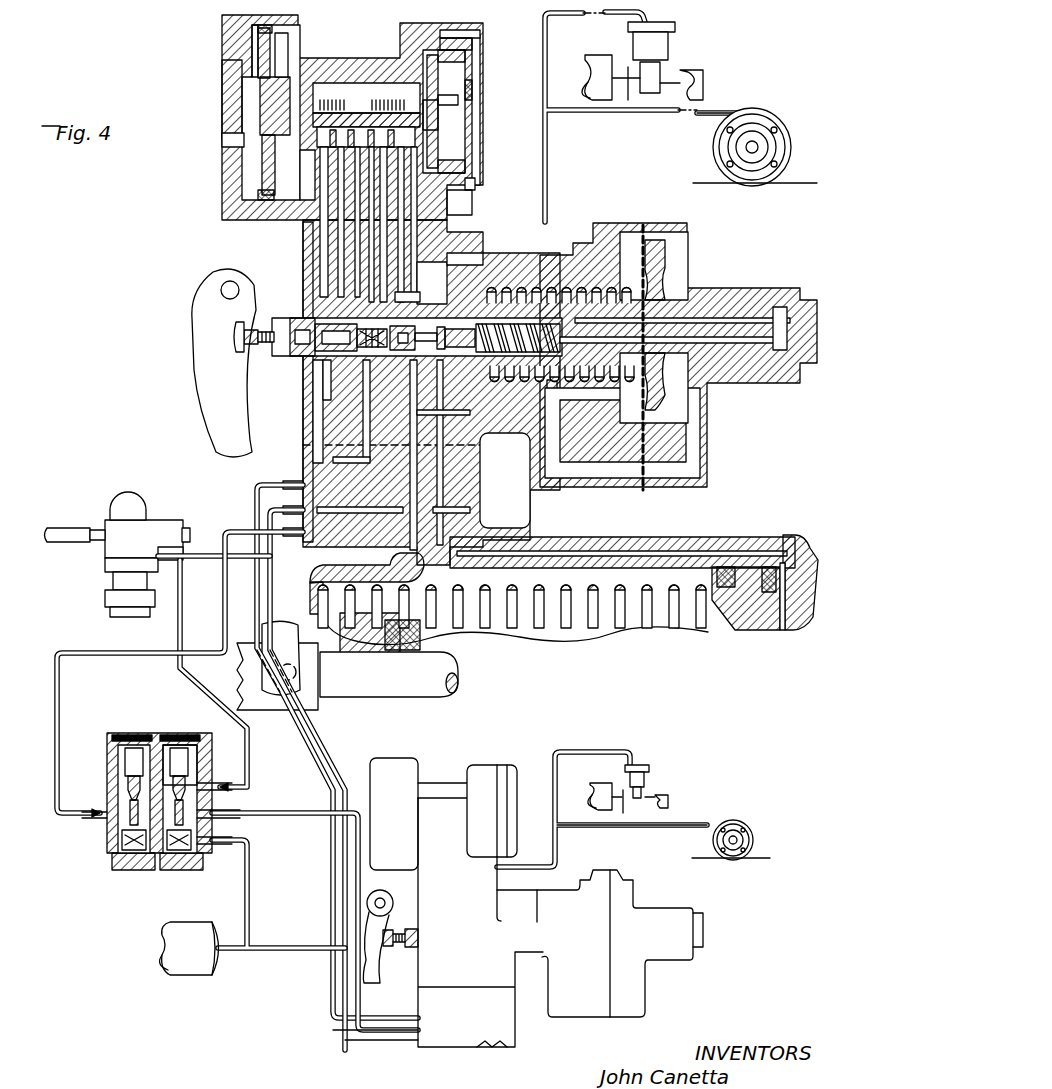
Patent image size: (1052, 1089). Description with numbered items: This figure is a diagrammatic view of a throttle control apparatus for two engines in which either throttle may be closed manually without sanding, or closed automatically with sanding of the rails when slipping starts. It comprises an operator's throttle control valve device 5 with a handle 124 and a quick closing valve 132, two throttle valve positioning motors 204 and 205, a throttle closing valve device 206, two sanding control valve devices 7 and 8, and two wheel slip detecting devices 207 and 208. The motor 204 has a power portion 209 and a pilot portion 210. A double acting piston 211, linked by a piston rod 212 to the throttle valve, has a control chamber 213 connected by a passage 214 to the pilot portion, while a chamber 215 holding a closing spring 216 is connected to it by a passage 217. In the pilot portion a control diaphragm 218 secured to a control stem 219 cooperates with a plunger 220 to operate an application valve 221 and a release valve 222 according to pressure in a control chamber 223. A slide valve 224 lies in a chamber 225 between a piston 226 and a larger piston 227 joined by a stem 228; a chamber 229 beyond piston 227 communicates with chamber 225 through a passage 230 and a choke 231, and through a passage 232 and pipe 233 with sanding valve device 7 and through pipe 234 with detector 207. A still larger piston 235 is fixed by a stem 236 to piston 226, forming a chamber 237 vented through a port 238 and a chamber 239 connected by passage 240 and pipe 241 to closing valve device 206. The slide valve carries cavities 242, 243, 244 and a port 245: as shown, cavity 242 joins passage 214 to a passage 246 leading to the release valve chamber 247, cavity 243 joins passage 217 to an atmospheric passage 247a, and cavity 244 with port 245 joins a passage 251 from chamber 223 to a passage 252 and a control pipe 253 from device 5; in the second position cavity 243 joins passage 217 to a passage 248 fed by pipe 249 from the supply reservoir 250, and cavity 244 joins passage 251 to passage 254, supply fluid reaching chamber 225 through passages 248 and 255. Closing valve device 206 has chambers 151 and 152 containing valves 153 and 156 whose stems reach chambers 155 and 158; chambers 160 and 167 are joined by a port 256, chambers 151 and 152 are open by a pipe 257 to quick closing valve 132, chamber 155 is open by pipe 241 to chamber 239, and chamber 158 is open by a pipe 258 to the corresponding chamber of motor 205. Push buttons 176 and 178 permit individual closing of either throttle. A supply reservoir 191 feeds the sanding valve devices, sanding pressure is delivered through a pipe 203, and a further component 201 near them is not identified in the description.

The operator's throttle control valve device 5 is at (123, 492).
The sanding control valve device 7 is at (680, 27).
The sanding control valve device 8 is at (648, 765).
The handle 124 is at (70, 530).
The quick closing valve 132 is at (167, 524).
The chamber 151 is at (120, 766).
The chamber 152 is at (200, 780).
The valve 153 is at (122, 788).
The chamber 155 is at (124, 812).
The valve 156 is at (210, 808).
The chamber 158 is at (210, 826).
The chamber 160 is at (118, 838).
The chamber 167 is at (190, 860).
The push button 176 is at (124, 734).
The push button 178 is at (176, 734).
The supply reservoir 191 is at (598, 62).
The connector 201 is at (694, 75).
The pipe 203 is at (628, 100).
The throttle valve positioning motor 204 is at (300, 405).
The throttle valve positioning motor 205 is at (410, 986).
The throttle closing valve device 206 is at (107, 746).
The wheel slip detecting device 207 is at (770, 135).
The wheel slip detecting device 208 is at (745, 826).
The power portion 209 is at (740, 530).
The pilot portion 210 is at (700, 262).
The double acting piston 211 is at (728, 605).
The piston rod 212 is at (430, 688).
The control chamber 213 is at (784, 615).
The passage 214 is at (310, 238).
The chamber 215 is at (610, 622).
The closing spring 216 is at (544, 620).
The passage 217 is at (330, 284).
The control diaphragm 218 is at (630, 260).
The control stem 219 is at (612, 315).
The plunger 220 is at (312, 370).
The application valve 221 is at (478, 322).
The release valve 222 is at (440, 280).
The control chamber 223 is at (660, 262).
The slide valve 224 is at (440, 128).
The chamber 225 is at (458, 66).
The piston 226 is at (290, 90).
The piston 227 is at (446, 115).
The stem 228 is at (455, 103).
The chamber 229 is at (545, 157).
The passage 230 is at (464, 30).
The choke 231 is at (465, 88).
The passage 232 is at (462, 178).
The pipe 233 is at (545, 181).
The pipe 234 is at (652, 116).
The piston 235 is at (256, 50).
The stem 236 is at (286, 110).
The chamber 237 is at (268, 28).
The port 238 is at (294, 40).
The chamber 239 is at (246, 78).
The passage 240 is at (240, 156).
The pipe 241 is at (58, 700).
The cavity 242 is at (345, 113).
The cavity 243 is at (372, 128).
The cavity 244 is at (450, 150).
The port 245 is at (320, 98).
The passage 246 is at (268, 196).
The chamber 247 is at (335, 428).
The atmospheric passage 247a is at (330, 262).
The passage 248 is at (425, 205).
The pipe 249 is at (268, 560).
The fluid pressure supply reservoir 250 is at (195, 978).
The passage 251 is at (445, 236).
The passage 252 is at (318, 300).
The control pipe 253 is at (258, 498).
The passage 254 is at (455, 190).
The passage 255 is at (345, 172).
The port 256 is at (150, 860).
The pipe 257 is at (195, 690).
The pipe 258 is at (383, 1040).